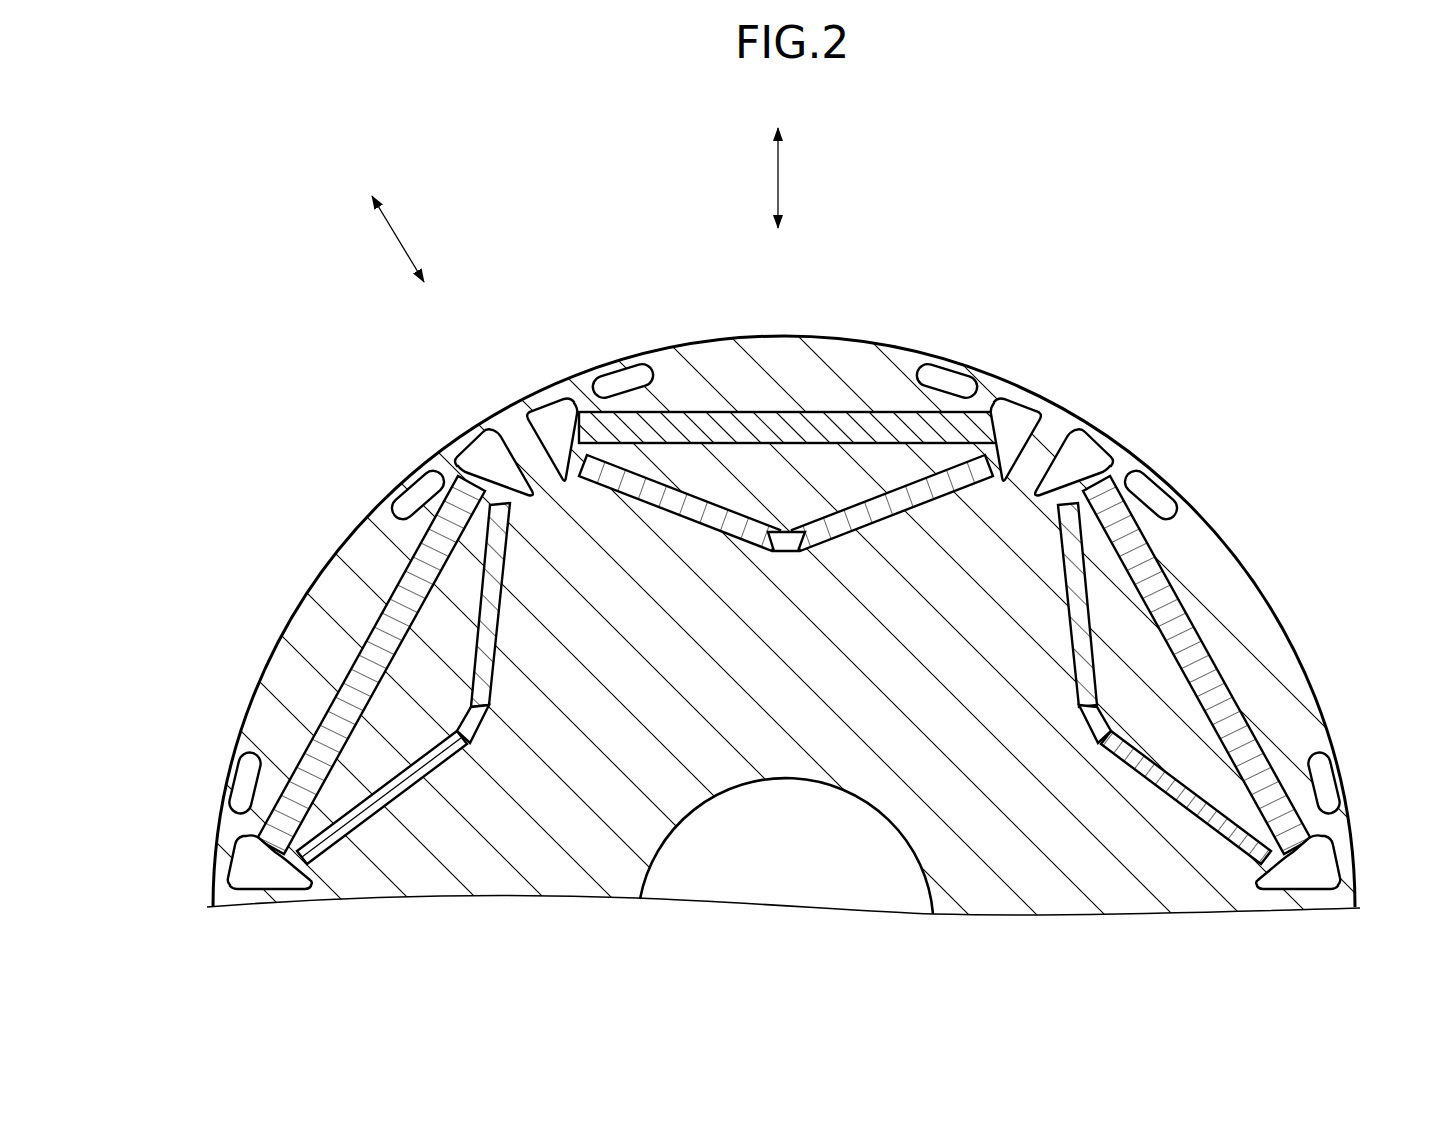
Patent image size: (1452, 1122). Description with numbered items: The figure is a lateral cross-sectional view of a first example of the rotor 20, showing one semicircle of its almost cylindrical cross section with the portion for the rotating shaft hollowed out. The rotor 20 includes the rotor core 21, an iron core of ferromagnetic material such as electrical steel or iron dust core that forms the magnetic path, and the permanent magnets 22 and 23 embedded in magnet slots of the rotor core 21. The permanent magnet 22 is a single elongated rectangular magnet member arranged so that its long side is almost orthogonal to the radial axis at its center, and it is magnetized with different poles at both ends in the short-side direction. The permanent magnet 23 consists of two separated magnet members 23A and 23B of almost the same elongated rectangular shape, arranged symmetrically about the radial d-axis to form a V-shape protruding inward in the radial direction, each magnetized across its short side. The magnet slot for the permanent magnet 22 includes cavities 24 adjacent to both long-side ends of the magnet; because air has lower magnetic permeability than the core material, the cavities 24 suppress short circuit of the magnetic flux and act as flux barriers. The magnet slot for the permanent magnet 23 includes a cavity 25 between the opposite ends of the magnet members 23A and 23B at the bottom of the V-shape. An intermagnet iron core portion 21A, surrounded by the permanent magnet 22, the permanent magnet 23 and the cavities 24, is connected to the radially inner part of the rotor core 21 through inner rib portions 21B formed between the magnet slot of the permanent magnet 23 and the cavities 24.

The rotor 20 is at (266, 142).
The rotor core 21 is at (716, 360).
The intermagnet iron core portion 21A is at (773, 478).
The inner rib portions 21B is at (575, 438).
The permanent magnet 22 is at (858, 415).
The permanent magnet 23 is at (784, 659).
The magnet member 23A is at (693, 518).
The magnet member 23B is at (855, 532).
The cavities 24 is at (548, 424).
The cavity 25 is at (882, 637).